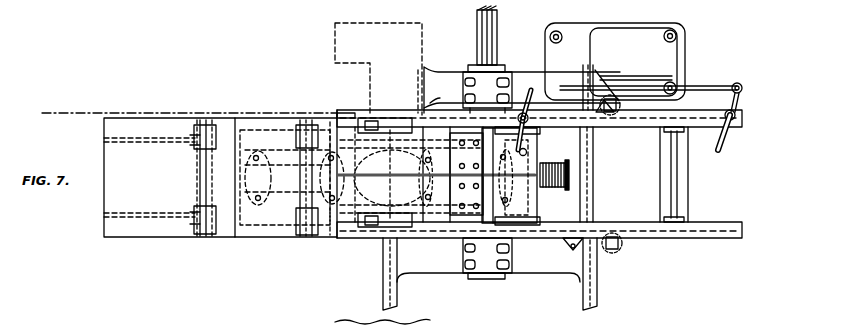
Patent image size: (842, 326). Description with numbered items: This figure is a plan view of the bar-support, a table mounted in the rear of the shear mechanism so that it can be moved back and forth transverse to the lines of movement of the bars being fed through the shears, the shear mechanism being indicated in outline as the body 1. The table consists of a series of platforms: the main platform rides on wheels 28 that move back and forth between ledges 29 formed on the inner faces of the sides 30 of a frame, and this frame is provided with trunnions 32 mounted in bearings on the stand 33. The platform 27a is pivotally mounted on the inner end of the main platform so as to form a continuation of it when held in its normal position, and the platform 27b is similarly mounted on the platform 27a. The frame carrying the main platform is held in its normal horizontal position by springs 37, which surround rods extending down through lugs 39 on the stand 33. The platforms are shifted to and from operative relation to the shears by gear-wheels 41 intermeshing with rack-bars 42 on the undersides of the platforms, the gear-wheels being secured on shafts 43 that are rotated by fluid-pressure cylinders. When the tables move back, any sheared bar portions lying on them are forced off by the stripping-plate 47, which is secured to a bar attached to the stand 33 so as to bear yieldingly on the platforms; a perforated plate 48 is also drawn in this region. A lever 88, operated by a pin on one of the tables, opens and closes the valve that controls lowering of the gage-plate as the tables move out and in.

The machine body (dashed outline) 1 is at (232, 70).
The platform 27b is at (169, 177).
The platform 27a is at (286, 174).
The rack-bar 42 is at (275, 194).
The sides of frame 30 is at (446, 117).
The stripping-plate 47 is at (436, 174).
The perforated plate 48 is at (466, 174).
The wheels 28 is at (537, 128).
The springs 37 is at (527, 153).
The gear-wheels 41 is at (570, 170).
The trunnions 32 is at (497, 70).
The shafts 43 is at (497, 22).
The lugs 39 is at (600, 82).
The lever 88 is at (534, 95).
The ledges 29 is at (620, 220).
The stand 33 is at (382, 292).